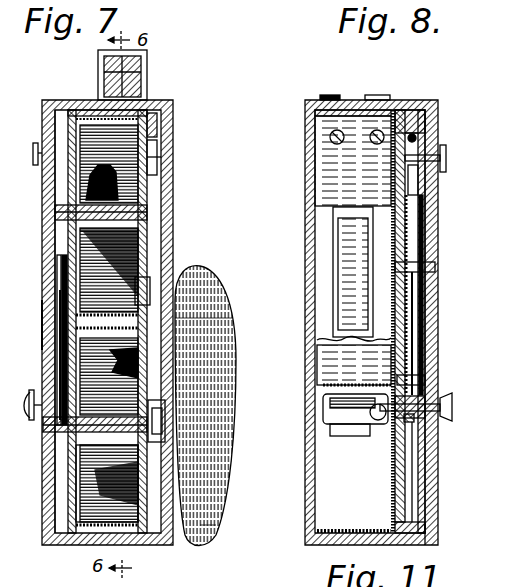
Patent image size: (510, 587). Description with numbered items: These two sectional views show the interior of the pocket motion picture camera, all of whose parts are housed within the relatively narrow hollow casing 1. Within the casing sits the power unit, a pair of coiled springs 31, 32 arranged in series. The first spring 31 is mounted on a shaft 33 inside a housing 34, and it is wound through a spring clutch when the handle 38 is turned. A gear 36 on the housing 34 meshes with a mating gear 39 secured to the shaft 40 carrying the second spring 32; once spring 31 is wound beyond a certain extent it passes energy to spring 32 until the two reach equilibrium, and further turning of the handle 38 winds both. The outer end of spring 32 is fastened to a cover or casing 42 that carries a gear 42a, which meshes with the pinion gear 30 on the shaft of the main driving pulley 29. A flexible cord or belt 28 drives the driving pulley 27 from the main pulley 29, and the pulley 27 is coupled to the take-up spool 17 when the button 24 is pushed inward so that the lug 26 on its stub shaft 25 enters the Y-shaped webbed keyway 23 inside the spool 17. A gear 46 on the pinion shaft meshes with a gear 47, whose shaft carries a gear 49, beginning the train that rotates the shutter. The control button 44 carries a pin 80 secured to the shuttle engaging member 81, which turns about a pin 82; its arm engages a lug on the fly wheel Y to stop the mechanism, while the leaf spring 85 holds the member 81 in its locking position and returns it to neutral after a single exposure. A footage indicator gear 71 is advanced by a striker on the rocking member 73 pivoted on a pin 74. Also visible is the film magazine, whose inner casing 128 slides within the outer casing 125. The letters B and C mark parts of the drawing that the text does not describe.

In FIG. 7, the hollow casing 1 is at (173, 540).
In FIG. 8, the hollow casing 1 is at (305, 528).
In FIG. 7, the block B is at (147, 82).
In FIG. 8, the take-up spool 17 is at (340, 430).
In FIG. 8, the webbed keyway 23 is at (368, 436).
In FIG. 7, the button 24 is at (43, 425).
In FIG. 8, the button 24 is at (452, 407).
In FIG. 8, the stub shaft 25 is at (425, 425).
In FIG. 8, the lug 26 is at (425, 385).
In FIG. 7, the driving pulley 27 is at (42, 395).
In FIG. 8, the driving pulley 27 is at (412, 425).
In FIG. 7, the flexible cord or belt 28 is at (60, 352).
In FIG. 8, the flexible cord or belt 28 is at (425, 340).
In FIG. 7, the main driving pulley 29 is at (62, 285).
In FIG. 8, the main driving pulley 29 is at (423, 312).
In FIG. 7, the pinion gear 30 is at (180, 290).
In FIG. 7, the coiled spring 31 is at (100, 515).
In FIG. 7, the coiled spring 32 is at (150, 258).
In FIG. 7, the shaft 33 is at (165, 420).
In FIG. 7, the housing 34 is at (138, 530).
In FIG. 7, the gear 36 is at (80, 510).
In FIG. 7, the handle 38 is at (216, 525).
In FIG. 7, the mating gear 39 is at (70, 190).
In FIG. 7, the shaft 40 is at (55, 212).
In FIG. 7, the cover or casing 42 is at (147, 190).
In FIG. 7, the gear 42a is at (232, 318).
In FIG. 7, the control button 44 is at (33, 152).
In FIG. 8, the control button 44 is at (446, 158).
In FIG. 7, the gear 46 is at (59, 255).
In FIG. 8, the gear 46 is at (420, 300).
In FIG. 8, the gear 47 is at (432, 256).
In FIG. 8, the gear 49 is at (380, 325).
In FIG. 8, the gear 71 is at (345, 88).
In FIG. 7, the rocking member 73 is at (157, 157).
In FIG. 7, the pin 74 is at (157, 124).
In FIG. 8, the pin 80 is at (418, 136).
In FIG. 8, the shuttle engaging member 81 is at (425, 185).
In FIG. 8, the pin 82 is at (392, 192).
In FIG. 8, the leaf spring 85 is at (405, 103).
In FIG. 8, the outer casing 125 is at (393, 507).
In FIG. 8, the inner casing 128 is at (375, 545).
In FIG. 7, the casing wall C is at (42, 268).
In FIG. 8, the casing wall C is at (432, 533).
In FIG. 7, the fly wheel Y is at (42, 327).